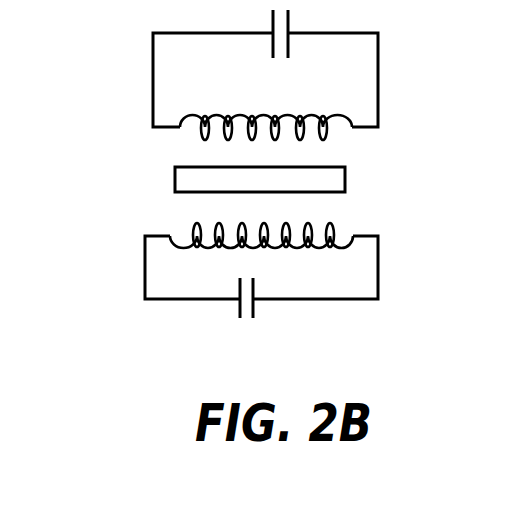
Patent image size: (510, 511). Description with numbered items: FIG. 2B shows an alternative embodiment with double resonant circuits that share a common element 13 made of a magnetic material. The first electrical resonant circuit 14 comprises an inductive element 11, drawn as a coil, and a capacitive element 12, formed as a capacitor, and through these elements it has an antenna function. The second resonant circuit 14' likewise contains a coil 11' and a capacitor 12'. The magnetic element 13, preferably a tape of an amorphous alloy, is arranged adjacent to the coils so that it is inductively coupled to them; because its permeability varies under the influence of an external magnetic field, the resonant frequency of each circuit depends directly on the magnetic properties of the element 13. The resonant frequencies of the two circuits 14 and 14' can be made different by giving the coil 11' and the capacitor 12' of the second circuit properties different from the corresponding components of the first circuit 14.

The inductive element 11 is at (225, 144).
The capacitive element 12 is at (245, 49).
The element made of a magnetic material 13 is at (175, 181).
The electrical resonant circuit 14 is at (215, 80).
The coil 11' is at (217, 236).
The capacitor 12' is at (282, 320).
The second resonant circuit 14' is at (215, 285).